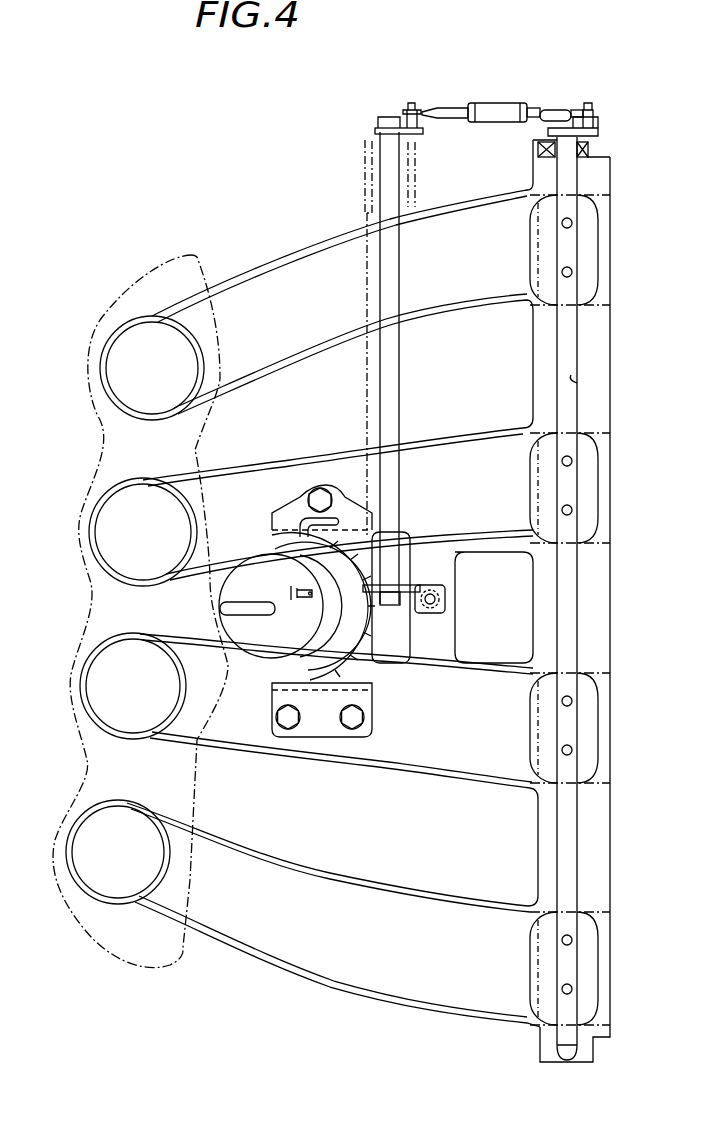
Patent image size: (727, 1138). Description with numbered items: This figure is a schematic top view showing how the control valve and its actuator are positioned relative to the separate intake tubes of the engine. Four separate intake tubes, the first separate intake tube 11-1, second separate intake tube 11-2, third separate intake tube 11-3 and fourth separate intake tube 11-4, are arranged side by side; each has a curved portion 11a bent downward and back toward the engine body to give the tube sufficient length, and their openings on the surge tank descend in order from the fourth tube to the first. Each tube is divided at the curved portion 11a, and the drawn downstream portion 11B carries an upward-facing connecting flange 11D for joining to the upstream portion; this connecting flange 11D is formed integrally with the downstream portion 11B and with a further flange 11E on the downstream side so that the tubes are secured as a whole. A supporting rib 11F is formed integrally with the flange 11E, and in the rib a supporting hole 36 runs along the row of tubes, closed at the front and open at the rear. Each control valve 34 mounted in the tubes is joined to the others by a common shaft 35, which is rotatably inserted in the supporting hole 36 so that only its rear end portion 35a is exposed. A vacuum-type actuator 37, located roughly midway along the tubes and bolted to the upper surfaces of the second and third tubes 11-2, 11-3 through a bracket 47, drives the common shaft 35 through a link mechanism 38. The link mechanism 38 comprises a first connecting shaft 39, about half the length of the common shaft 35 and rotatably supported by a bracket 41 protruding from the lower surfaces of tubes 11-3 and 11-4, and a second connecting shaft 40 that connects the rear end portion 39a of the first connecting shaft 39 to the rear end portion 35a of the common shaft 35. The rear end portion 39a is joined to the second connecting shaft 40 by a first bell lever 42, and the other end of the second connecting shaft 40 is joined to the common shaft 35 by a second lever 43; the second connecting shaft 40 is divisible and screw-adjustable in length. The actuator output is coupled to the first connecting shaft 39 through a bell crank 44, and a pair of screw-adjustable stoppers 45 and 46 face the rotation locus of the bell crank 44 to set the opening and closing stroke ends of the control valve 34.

The curved portion 11a is at (105, 393).
The downstream portion 11B is at (333, 587).
The first separate intake tube 11-1 is at (292, 980).
The second separate intake tube 11-2 is at (341, 769).
The third separate intake tube 11-3 is at (455, 437).
The fourth separate intake tube 11-4 is at (248, 262).
The connecting flange 11D is at (100, 935).
The flange 11E is at (596, 601).
The supporting rib 11F is at (590, 849).
The control valve 34 is at (588, 263).
The common shaft 35 is at (573, 607).
The rear end portion of the common shaft 35a is at (570, 165).
The supporting hole 36 is at (577, 383).
The actuator 37 is at (264, 663).
The link mechanism 38 is at (354, 368).
The first connecting shaft 39 is at (380, 308).
The rear end portion of the first connecting shaft 39a is at (387, 117).
The second connecting shaft 40 is at (497, 103).
The bracket 41 is at (413, 193).
The first bell lever 42 is at (413, 131).
The second lever 43 is at (597, 133).
The bell crank 44 is at (397, 592).
The stopper 45 is at (446, 597).
The stopper 46 is at (296, 562).
The bracket 47 is at (291, 517).